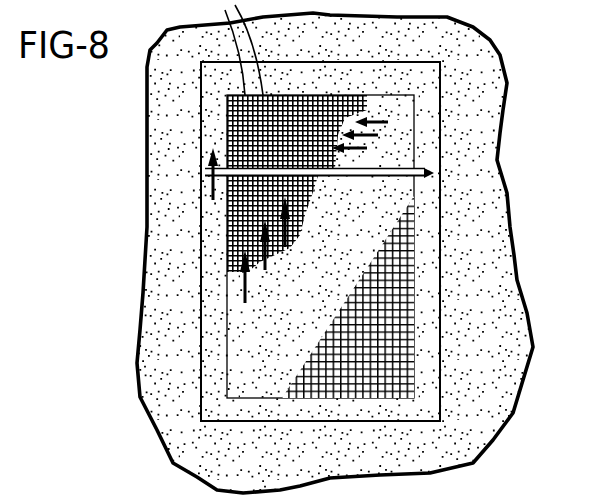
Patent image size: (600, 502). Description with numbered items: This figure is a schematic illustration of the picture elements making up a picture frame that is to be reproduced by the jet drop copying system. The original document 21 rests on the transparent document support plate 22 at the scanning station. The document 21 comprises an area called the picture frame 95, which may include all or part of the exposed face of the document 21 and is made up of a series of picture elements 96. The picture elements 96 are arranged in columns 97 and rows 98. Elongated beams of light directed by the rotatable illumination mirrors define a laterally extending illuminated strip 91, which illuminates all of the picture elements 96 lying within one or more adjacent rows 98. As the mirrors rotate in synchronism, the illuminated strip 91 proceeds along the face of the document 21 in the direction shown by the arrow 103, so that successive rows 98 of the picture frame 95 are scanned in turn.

The transparent document support plate 22 is at (484, 101).
The original document 21 is at (440, 313).
The picture frame 95 is at (413, 360).
The picture elements 96 is at (223, 47).
The arrow 103 is at (207, 183).
The illuminated strip 91 is at (432, 180).
The rows 98 is at (368, 152).
The columns 97 is at (130, 274).